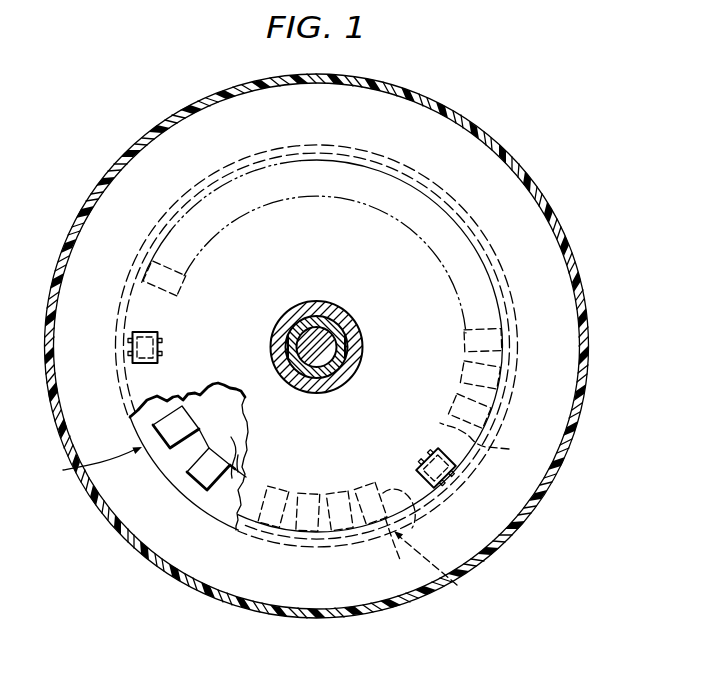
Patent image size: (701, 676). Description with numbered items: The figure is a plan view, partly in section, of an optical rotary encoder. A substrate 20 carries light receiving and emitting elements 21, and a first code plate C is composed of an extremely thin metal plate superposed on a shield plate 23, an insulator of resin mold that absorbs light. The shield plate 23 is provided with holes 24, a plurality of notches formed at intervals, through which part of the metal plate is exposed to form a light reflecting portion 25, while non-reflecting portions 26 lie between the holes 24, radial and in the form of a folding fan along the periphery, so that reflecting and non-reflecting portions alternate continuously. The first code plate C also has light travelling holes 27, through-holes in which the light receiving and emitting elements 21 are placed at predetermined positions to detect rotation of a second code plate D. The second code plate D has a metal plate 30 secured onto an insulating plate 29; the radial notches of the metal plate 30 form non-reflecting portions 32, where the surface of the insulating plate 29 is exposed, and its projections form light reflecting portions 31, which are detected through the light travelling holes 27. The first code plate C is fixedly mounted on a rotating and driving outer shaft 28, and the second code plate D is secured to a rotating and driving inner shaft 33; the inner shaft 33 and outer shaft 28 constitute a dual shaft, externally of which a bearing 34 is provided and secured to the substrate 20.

The substrate 20 is at (552, 255).
The light receiving and emitting element 21 is at (297, 421).
The shield plate 23 is at (486, 443).
The holes 24 is at (428, 515).
The light reflecting portion 25 is at (412, 530).
The non-reflecting portion 26 is at (401, 553).
The light travelling hole 27 is at (130, 346).
The outer shaft 28 is at (340, 347).
The insulating plate 29 is at (151, 466).
The metal plate 30 is at (233, 470).
The light reflecting portion 31 is at (207, 491).
The non-reflecting portion 32 is at (192, 452).
The inner shaft 33 is at (327, 332).
The bearing 34 is at (348, 375).
The first code plate C is at (435, 570).
The second code plate D is at (94, 466).